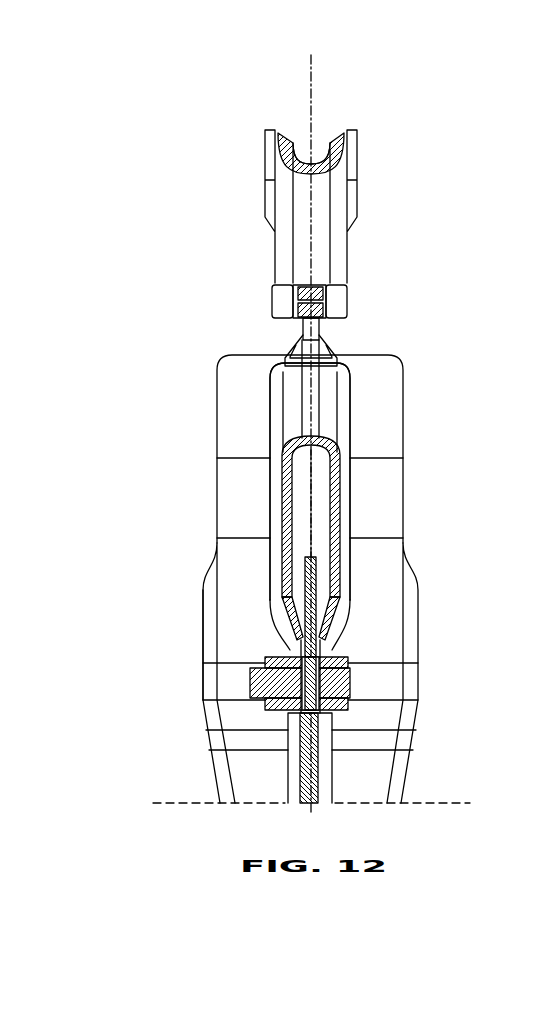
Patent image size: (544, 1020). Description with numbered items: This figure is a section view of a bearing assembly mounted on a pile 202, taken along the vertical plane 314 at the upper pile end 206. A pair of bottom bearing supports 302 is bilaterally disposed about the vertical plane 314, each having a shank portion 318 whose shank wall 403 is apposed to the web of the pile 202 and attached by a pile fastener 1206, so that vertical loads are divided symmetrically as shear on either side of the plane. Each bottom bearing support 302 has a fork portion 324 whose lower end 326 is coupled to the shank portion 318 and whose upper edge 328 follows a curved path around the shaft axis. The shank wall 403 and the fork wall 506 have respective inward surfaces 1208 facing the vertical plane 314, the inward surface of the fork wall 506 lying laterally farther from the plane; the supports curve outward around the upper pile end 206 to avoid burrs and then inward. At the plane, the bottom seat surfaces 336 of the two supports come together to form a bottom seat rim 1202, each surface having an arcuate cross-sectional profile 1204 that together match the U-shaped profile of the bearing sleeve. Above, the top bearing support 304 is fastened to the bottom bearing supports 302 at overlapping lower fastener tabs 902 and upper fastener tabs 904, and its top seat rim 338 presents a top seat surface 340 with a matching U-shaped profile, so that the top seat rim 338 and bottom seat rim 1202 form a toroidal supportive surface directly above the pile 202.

The vertical plane 314 is at (313, 91).
The top seat rim 338 is at (353, 163).
The top seat surface 340 is at (353, 163).
The top bearing support 304 is at (364, 197).
The lower fastener tab 902 is at (340, 293).
The upper fastener tab 904 is at (300, 323).
The bottom seat surface 336 is at (327, 388).
The bottom seat rim 1202 is at (288, 398).
The arcuate cross-sectional profile 1204 is at (340, 437).
The fork portion 324 is at (346, 465).
The upper edge 328 is at (282, 443).
The fork wall 506 is at (347, 490).
The inward surface 1208 is at (315, 513).
The upper pile end 206 is at (305, 558).
The bottom bearing support 302 is at (200, 628).
The pile 202 is at (203, 595).
The lower end 326 is at (341, 628).
The pile fastener 1206 is at (350, 680).
The shank portion 318 is at (325, 749).
The shank wall 403 is at (333, 776).